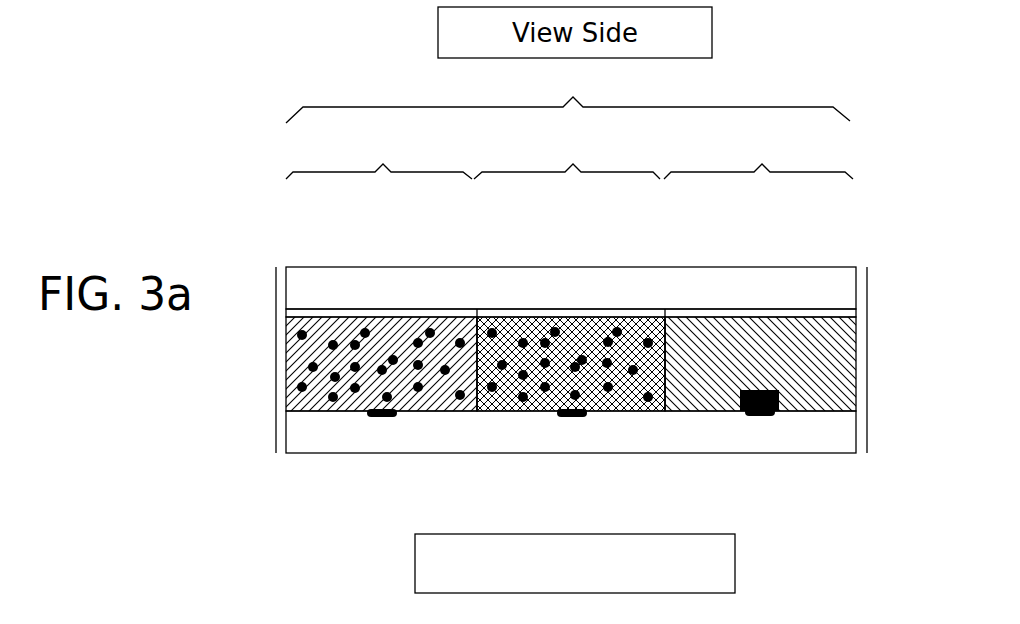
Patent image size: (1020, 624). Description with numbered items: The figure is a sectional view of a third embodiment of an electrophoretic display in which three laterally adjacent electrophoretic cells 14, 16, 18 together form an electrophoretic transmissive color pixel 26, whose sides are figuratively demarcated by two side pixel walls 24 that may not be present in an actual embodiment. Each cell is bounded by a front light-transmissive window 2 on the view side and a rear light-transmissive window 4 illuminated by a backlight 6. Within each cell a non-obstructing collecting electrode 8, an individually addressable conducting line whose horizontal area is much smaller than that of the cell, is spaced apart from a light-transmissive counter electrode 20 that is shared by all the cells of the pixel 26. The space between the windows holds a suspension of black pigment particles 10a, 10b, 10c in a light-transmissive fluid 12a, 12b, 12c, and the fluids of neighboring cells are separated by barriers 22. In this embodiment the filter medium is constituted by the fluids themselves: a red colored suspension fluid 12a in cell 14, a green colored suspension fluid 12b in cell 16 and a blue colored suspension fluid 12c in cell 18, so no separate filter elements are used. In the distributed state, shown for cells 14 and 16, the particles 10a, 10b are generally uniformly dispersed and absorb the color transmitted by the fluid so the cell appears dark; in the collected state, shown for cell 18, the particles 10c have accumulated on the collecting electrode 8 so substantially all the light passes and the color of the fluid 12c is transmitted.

The front light-transmissive window 2 is at (835, 280).
The rear light-transmissive window 4 is at (794, 432).
The backlight 6 is at (730, 563).
The collecting electrode 8 is at (382, 418).
The pigment particles 10a is at (333, 398).
The pigment particles 10b is at (522, 398).
The pigment particles 10c is at (739, 411).
The light-transmissive fluid 12a is at (324, 327).
The light-transmissive fluid 12b is at (510, 325).
The light-transmissive fluid 12c is at (695, 332).
The electrophoretic cell 14 is at (379, 159).
The electrophoretic cell 16 is at (567, 159).
The electrophoretic cell 18 is at (758, 159).
The light-transmissive counter electrode 20 is at (423, 312).
The barrier 22 is at (291, 403).
The side pixel wall 24 is at (275, 367).
The electrophoretic transmissive color pixel 26 is at (568, 99).